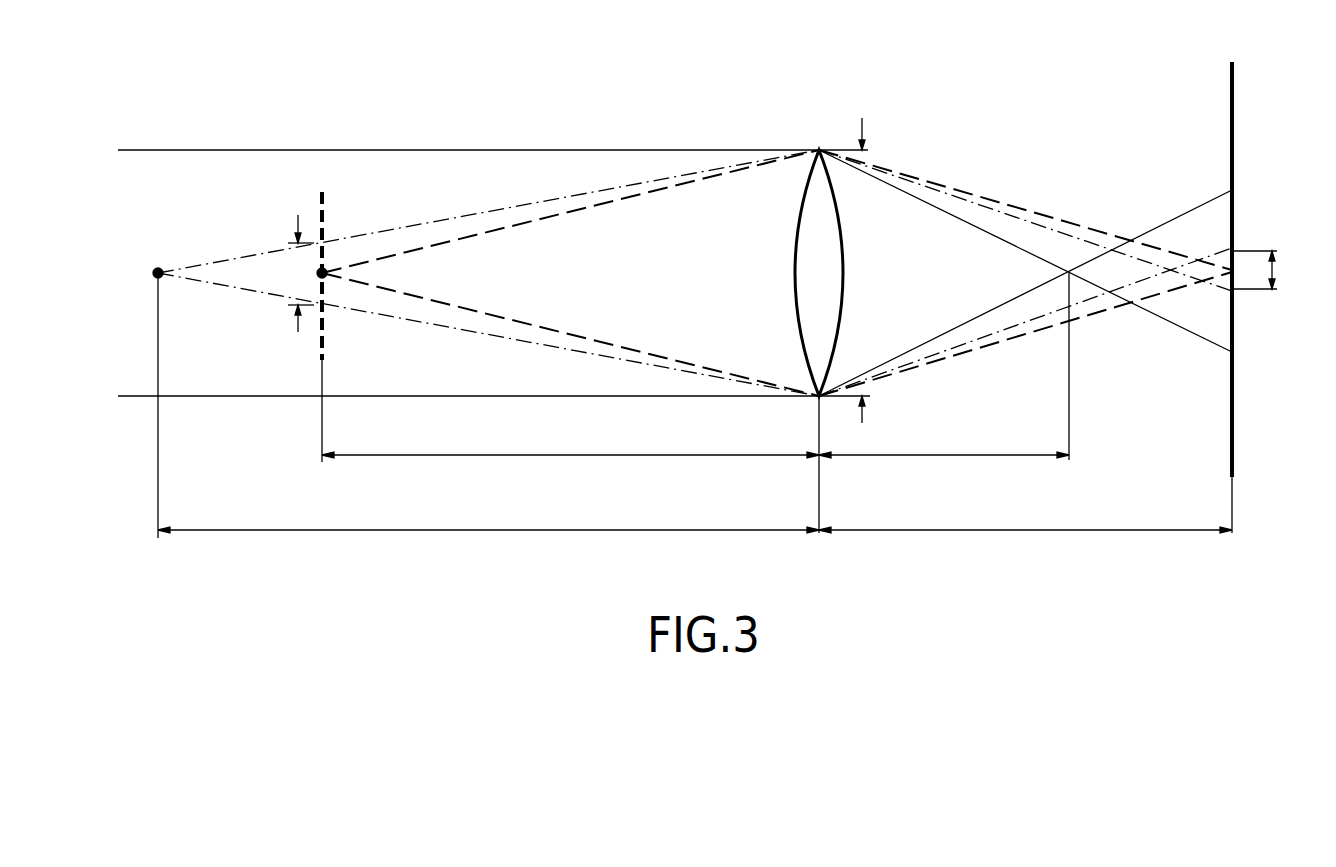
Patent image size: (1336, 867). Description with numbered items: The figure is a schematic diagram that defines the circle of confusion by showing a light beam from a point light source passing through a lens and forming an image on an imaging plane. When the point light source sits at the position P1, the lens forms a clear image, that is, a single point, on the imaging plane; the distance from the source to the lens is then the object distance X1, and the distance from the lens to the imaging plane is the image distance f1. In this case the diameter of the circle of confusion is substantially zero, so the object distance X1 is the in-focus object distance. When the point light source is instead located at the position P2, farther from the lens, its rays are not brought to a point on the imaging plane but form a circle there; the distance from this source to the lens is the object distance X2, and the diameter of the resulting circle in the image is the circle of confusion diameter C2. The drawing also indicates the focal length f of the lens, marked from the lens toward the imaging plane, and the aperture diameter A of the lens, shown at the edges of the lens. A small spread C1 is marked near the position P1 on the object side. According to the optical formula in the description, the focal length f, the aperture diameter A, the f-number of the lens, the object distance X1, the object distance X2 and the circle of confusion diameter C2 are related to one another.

The position P1 is at (304, 273).
The position P2 is at (139, 273).
The blur circle diameter at object plane C1 is at (295, 259).
The circle of confusion diameter C2 is at (1274, 270).
The aperture diameter A is at (861, 255).
The object distance X1 is at (570, 437).
The object distance X2 is at (488, 512).
The focal length f is at (944, 437).
The image distance f1 is at (1025, 512).